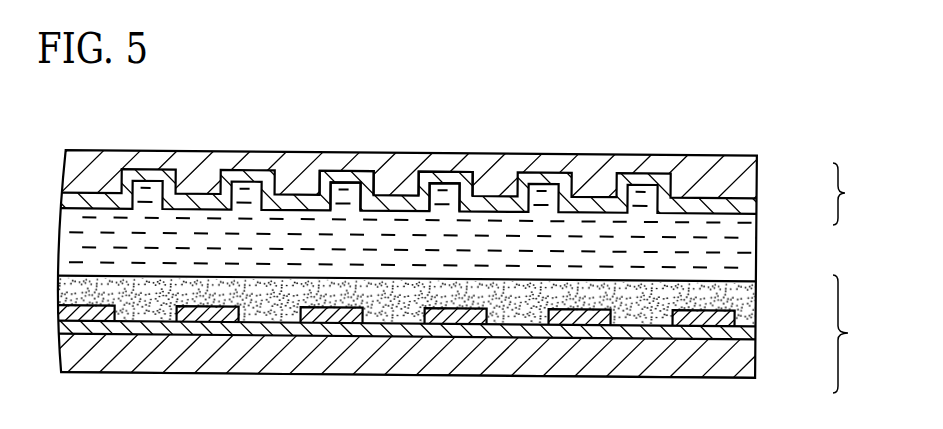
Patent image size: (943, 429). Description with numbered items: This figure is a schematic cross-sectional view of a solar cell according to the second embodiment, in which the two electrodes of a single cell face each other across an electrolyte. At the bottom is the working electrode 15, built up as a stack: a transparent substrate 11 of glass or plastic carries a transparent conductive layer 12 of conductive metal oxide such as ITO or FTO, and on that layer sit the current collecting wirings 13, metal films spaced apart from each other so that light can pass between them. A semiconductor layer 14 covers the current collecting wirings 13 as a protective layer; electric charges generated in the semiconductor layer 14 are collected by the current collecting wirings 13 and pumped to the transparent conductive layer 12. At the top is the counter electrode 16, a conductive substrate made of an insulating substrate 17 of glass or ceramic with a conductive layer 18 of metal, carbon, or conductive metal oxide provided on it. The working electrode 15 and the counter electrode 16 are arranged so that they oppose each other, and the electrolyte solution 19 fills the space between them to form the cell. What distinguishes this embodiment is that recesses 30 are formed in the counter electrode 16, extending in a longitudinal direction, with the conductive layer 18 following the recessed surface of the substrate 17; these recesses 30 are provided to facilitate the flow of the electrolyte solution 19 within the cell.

The transparent substrate 11 is at (750, 358).
The transparent conductive layer 12 is at (750, 334).
The current collecting wirings 13 is at (750, 317).
The semiconductor layer 14 is at (750, 289).
The working electrode 15 is at (858, 334).
The counter electrode 16 is at (858, 194).
The substrate 17 is at (750, 180).
The conductive layer 18 is at (750, 210).
The electrolyte solution 19 is at (750, 247).
The recesses 30 is at (340, 180).